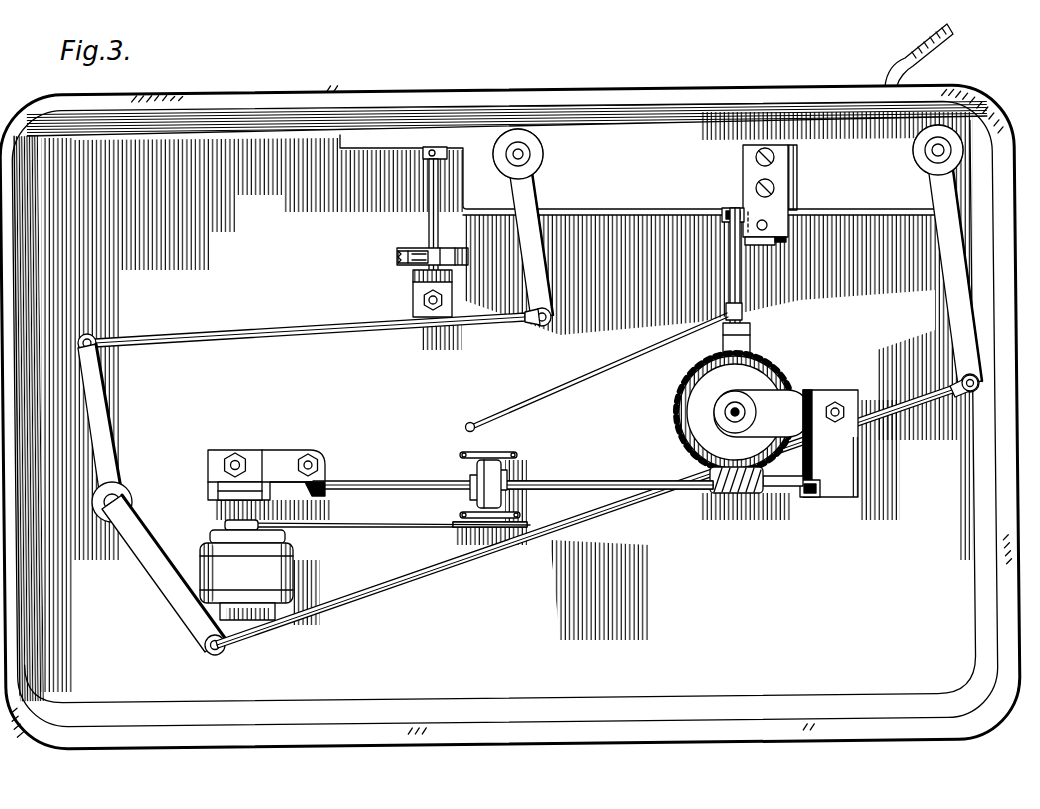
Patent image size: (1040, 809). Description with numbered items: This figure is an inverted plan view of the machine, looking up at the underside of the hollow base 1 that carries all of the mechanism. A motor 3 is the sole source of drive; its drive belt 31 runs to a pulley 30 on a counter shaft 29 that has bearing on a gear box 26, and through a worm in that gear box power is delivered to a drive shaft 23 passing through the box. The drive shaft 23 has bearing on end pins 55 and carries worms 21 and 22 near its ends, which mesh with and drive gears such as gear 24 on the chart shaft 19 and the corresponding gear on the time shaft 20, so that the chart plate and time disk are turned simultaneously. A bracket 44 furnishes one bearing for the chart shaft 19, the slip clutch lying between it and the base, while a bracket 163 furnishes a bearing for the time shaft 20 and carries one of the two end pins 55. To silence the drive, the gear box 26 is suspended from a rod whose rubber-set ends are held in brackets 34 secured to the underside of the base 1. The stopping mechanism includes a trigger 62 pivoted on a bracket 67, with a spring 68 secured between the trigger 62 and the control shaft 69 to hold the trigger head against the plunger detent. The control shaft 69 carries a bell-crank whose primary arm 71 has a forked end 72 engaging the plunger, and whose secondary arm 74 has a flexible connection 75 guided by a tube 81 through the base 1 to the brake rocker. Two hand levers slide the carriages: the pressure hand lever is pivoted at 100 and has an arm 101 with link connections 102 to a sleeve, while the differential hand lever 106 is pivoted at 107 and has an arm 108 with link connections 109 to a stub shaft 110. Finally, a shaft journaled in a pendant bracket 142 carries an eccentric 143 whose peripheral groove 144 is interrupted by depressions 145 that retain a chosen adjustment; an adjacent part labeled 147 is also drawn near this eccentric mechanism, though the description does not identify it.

The hollow base 1 is at (548, 745).
The motor 3 is at (255, 586).
The chart shaft 19 is at (722, 412).
The time shaft 20 is at (320, 464).
The worm 21 is at (742, 494).
The worm 22 is at (330, 484).
The drive shaft 23 is at (586, 482).
The gear 24 is at (678, 400).
The gear box 26 is at (490, 476).
The counter shaft 29 is at (470, 520).
The pulley 30 is at (458, 526).
The drive belt 31 is at (388, 528).
The brackets 34 is at (510, 452).
The bracket 44 is at (796, 395).
The end pins 55 is at (812, 500).
The trigger 62 is at (765, 245).
The bracket 67 is at (785, 196).
The spring 68 is at (732, 226).
The control shaft 69 is at (730, 298).
The primary arm 71 is at (748, 212).
The forked end 72 is at (766, 222).
The secondary arm 74 is at (744, 314).
The flexible connection 75 is at (582, 376).
The tube 81 is at (466, 424).
The pivot 100 is at (940, 148).
The arm 101 is at (932, 190).
The link connections 102 is at (170, 600).
The differential hand lever 106 is at (905, 58).
The pivot 107 is at (532, 154).
The arm 108 is at (548, 300).
The link connections 109 is at (335, 325).
The stub shaft 110 is at (120, 500).
The pendant bracket 142 is at (418, 284).
The eccentric 143 is at (468, 260).
The peripheral groove 144 is at (410, 258).
The depressions 145 is at (420, 256).
The guide rod 147 is at (440, 240).
The bracket 163 is at (222, 491).